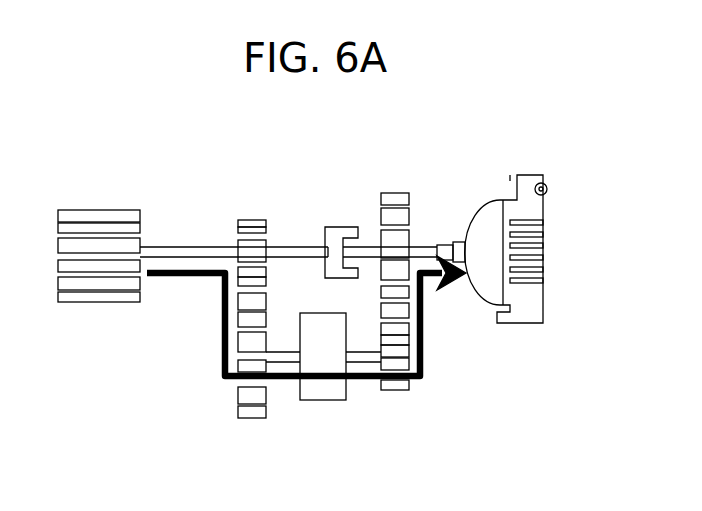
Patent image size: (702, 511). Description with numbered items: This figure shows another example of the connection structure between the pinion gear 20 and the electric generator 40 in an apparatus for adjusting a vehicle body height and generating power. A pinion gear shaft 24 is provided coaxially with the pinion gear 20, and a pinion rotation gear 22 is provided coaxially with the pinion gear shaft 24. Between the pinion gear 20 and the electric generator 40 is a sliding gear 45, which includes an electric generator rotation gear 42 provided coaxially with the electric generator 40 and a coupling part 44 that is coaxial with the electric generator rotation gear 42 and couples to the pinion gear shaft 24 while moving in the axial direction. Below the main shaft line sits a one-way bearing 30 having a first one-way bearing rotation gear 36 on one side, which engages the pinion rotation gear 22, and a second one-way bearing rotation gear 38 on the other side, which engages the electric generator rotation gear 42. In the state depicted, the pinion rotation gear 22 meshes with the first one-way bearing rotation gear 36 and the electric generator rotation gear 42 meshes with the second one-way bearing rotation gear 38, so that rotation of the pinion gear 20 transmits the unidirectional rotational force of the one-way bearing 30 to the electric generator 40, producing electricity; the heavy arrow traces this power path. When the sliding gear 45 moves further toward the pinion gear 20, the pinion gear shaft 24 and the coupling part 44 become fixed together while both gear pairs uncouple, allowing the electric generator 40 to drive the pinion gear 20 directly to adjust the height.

The pinion gear 20 is at (100, 212).
The pinion rotation gear 22 is at (251, 220).
The pinion gear shaft 24 is at (297, 250).
The one-way bearing 30 is at (322, 400).
The first one-way bearing rotation gear 36 is at (238, 409).
The second one-way bearing rotation gear 38 is at (395, 391).
The electric generator 40 is at (527, 175).
The electric generator rotation gear 42 is at (395, 193).
The coupling part 44 is at (343, 227).
The sliding gear 45 is at (408, 133).